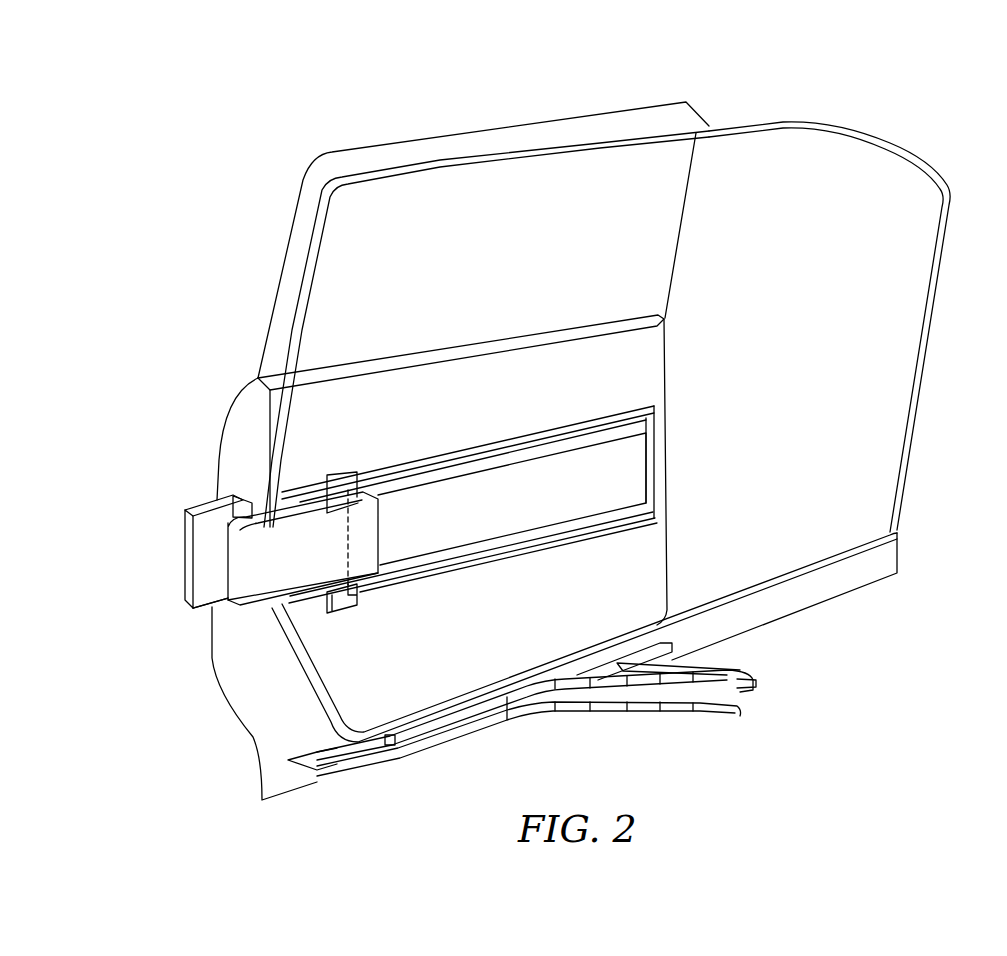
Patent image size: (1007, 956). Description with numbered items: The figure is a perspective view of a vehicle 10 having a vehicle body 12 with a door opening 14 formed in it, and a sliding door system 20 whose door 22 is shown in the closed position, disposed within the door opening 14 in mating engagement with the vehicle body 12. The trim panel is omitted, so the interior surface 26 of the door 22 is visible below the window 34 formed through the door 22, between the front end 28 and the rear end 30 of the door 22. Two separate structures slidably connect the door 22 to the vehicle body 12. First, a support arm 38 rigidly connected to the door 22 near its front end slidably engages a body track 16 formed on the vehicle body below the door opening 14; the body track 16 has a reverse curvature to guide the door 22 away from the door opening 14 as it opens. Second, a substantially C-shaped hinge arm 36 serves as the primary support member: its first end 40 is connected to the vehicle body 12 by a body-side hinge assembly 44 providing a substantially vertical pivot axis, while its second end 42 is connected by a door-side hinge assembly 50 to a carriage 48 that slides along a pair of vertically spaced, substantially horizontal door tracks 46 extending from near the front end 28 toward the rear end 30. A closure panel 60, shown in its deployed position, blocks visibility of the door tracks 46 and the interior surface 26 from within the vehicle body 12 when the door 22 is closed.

The vehicle 10 is at (946, 106).
The vehicle body 12 is at (930, 324).
The door opening 14 is at (815, 254).
The body track 16 is at (737, 708).
The sliding door system 20 is at (166, 146).
The door 22 is at (222, 447).
The interior surface 26 is at (664, 362).
The front end 28 is at (722, 546).
The rear end 30 is at (216, 796).
The window 34 is at (322, 278).
The hinge arm 36 is at (265, 592).
The support arm 38 is at (700, 667).
The first end 40 is at (242, 602).
The second end 42 is at (370, 551).
The body-side hinge assembly 44 is at (245, 503).
The door tracks 46 is at (624, 410).
The carriage 48 is at (341, 475).
The door-side hinge assembly 50 is at (348, 497).
The closure panel 60 is at (656, 470).